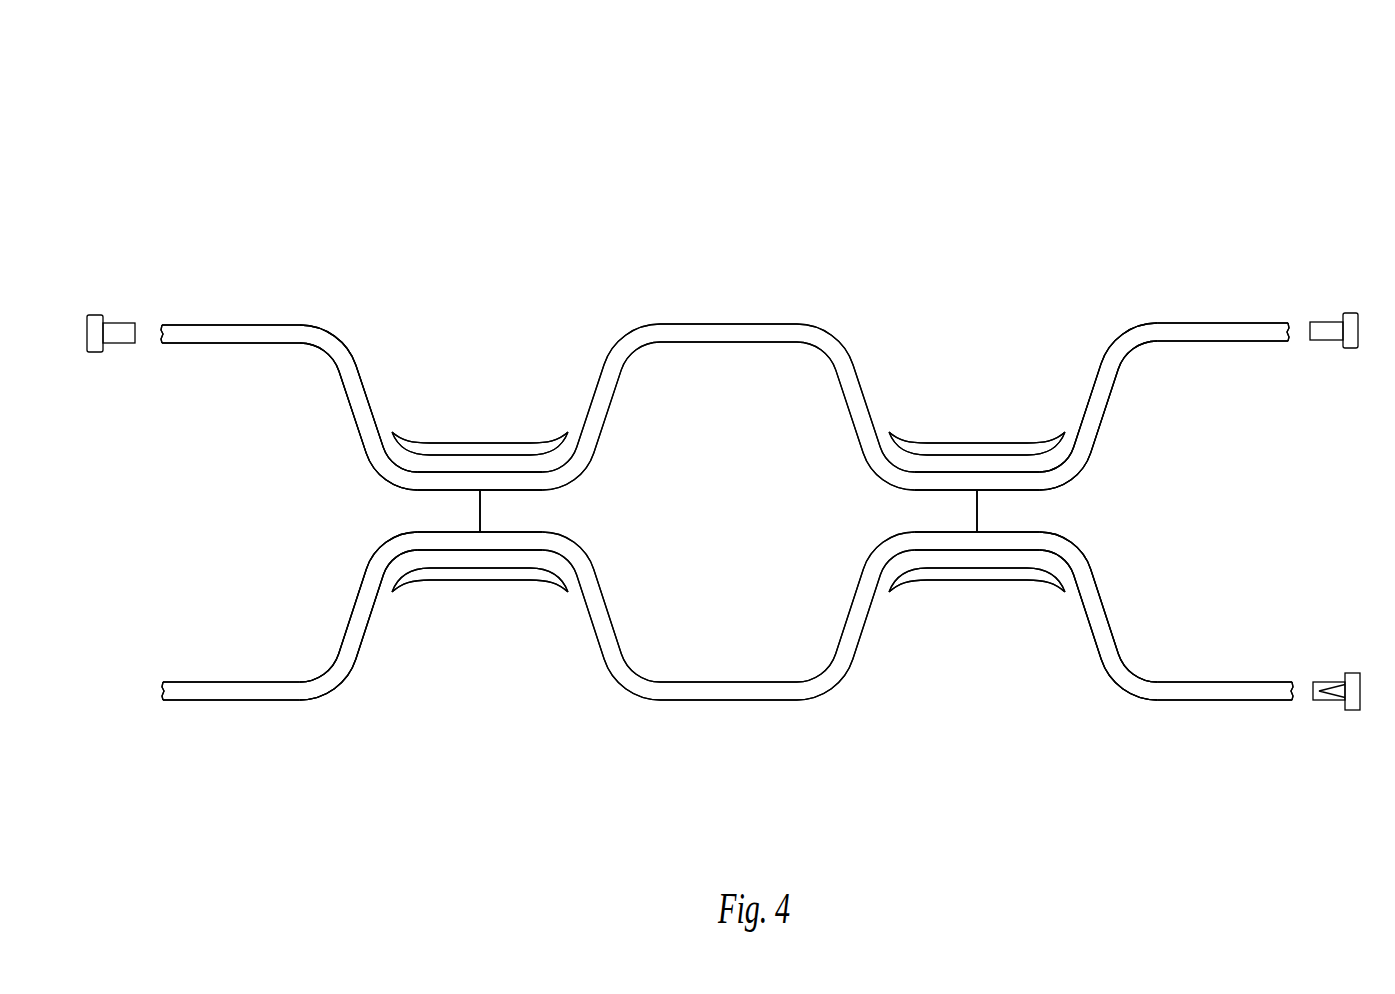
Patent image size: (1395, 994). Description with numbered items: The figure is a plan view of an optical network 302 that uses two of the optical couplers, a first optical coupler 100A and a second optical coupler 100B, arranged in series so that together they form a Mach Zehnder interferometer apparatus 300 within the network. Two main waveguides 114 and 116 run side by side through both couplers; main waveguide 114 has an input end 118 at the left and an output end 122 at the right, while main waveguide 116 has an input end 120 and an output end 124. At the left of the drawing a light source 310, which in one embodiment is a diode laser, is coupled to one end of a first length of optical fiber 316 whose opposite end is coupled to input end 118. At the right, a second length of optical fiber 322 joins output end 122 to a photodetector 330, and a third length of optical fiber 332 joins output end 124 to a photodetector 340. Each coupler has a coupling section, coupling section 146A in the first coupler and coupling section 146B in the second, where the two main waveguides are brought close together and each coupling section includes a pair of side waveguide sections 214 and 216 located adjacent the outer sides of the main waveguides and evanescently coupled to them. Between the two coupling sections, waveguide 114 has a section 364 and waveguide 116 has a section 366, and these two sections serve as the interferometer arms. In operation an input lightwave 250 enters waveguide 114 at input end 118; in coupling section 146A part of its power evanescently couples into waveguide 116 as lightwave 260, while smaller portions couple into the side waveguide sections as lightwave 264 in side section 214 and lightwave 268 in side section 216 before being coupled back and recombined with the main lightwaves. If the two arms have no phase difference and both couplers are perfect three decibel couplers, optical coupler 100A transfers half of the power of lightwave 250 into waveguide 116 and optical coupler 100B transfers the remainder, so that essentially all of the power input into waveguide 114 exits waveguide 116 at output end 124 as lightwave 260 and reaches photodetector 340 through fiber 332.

The optical coupler 100A is at (459, 266).
The optical coupler 100B is at (957, 265).
The main waveguide 114 is at (320, 305).
The main waveguide 116 is at (295, 728).
The input end 118 is at (230, 356).
The input end 120 is at (231, 671).
The output end 122 is at (1226, 354).
The output end 124 is at (1227, 670).
The coupling section 146A is at (488, 692).
The coupling section 146B is at (985, 692).
The side waveguide section 214 is at (498, 430).
The side waveguide section 216 is at (510, 600).
The input lightwave 250 is at (916, 497).
The lightwave 260 is at (419, 519).
The lightwave 264 is at (454, 437).
The lightwave 268 is at (454, 591).
The Mach Zehnder interferometer apparatus 300 is at (897, 151).
The optical network 302 is at (1212, 85).
The light source 310 is at (96, 311).
The first length of optical fiber 316 is at (119, 355).
The second length of optical fiber 322 is at (1312, 321).
The photodetector 330 is at (1351, 309).
The third length of optical fiber 332 is at (1316, 712).
The photodetector 340 is at (1353, 716).
The section 364 is at (660, 298).
The section 366 is at (662, 725).